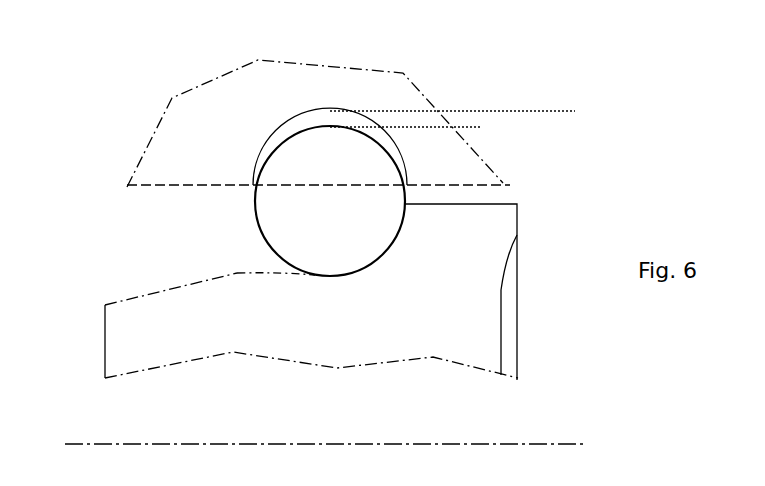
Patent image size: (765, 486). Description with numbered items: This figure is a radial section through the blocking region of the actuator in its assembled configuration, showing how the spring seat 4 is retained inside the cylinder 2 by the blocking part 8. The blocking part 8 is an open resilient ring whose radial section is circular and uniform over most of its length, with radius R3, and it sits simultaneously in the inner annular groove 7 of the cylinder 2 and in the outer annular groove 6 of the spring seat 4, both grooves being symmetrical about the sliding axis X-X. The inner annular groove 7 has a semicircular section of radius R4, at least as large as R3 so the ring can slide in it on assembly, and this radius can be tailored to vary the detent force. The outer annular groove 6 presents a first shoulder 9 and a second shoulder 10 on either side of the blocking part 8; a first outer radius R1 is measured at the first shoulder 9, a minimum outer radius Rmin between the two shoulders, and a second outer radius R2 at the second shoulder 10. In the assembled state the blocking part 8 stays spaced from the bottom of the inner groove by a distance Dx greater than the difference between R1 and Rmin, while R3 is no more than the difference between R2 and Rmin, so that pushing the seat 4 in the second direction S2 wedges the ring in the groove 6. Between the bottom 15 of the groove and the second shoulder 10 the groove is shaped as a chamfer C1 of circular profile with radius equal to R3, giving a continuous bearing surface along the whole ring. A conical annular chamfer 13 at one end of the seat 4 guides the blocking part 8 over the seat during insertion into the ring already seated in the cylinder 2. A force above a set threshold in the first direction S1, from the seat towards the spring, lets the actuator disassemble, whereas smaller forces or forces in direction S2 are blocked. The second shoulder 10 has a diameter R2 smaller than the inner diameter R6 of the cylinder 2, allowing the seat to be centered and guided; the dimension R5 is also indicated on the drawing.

The cylinder 2 is at (166, 118).
The spring seat 4 is at (513, 222).
The outer annular groove 6 is at (392, 248).
The inner annular groove 7 is at (307, 110).
The blocking part 8 is at (275, 157).
The first shoulder 9 is at (260, 275).
The second shoulder 10 is at (507, 203).
The conical annular chamfer 13 is at (132, 300).
The bottom of the groove 15 is at (343, 278).
The chamfer C1 is at (371, 268).
The first outer radius R1 is at (262, 273).
The second outer radius R2 is at (455, 204).
The radius of the blocking part section R3 is at (330, 202).
The radius of the inner annular groove R4 is at (330, 185).
The radius R5 is at (558, 111).
The inner diameter of the cylinder R6 is at (149, 185).
The minimum outer radius Rmin is at (332, 276).
The distance Dx is at (467, 127).
The first direction S1 is at (62, 325).
The second direction S2 is at (62, 362).
The sliding axis X-X is at (97, 444).